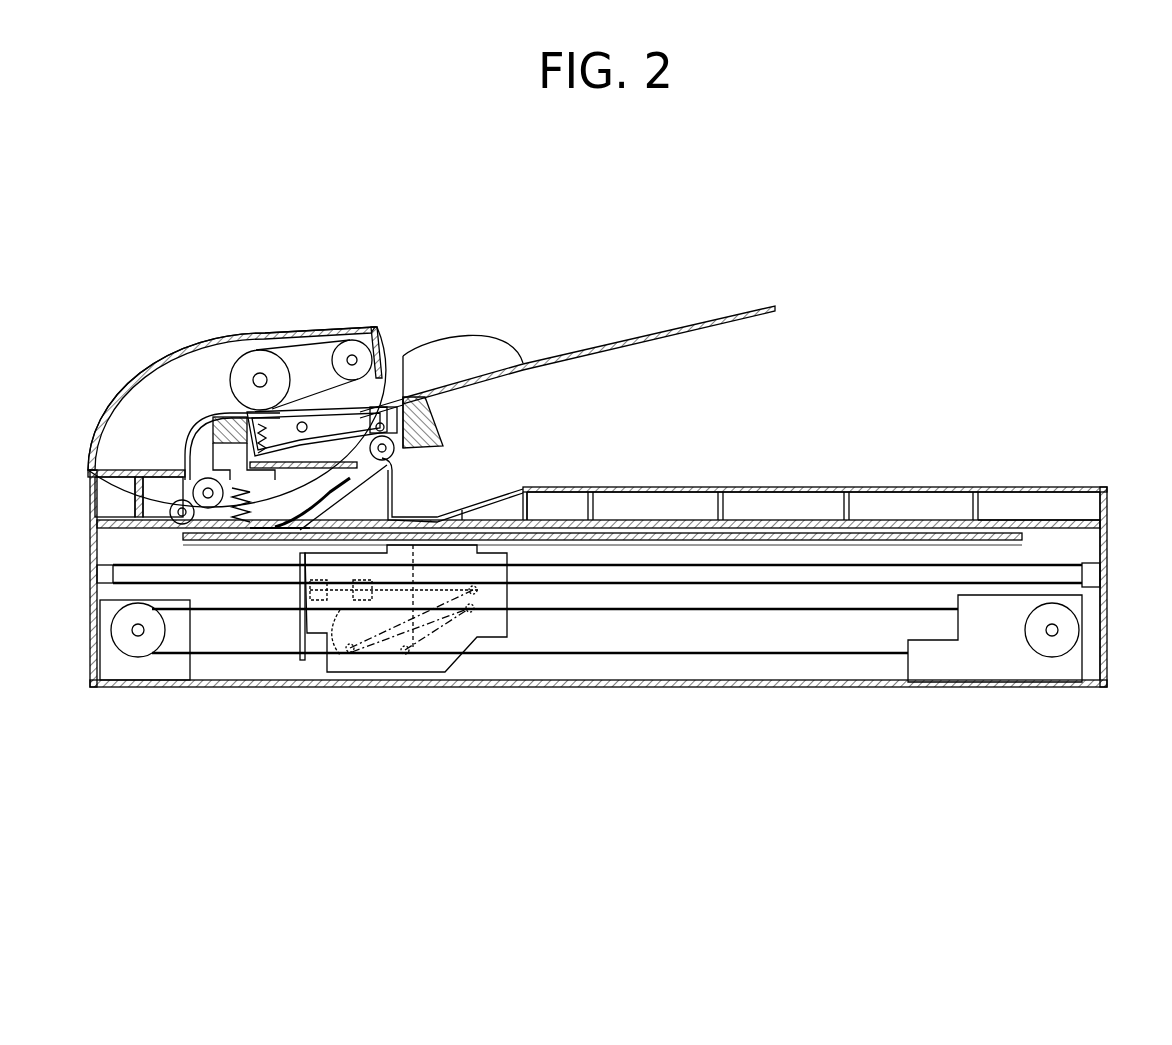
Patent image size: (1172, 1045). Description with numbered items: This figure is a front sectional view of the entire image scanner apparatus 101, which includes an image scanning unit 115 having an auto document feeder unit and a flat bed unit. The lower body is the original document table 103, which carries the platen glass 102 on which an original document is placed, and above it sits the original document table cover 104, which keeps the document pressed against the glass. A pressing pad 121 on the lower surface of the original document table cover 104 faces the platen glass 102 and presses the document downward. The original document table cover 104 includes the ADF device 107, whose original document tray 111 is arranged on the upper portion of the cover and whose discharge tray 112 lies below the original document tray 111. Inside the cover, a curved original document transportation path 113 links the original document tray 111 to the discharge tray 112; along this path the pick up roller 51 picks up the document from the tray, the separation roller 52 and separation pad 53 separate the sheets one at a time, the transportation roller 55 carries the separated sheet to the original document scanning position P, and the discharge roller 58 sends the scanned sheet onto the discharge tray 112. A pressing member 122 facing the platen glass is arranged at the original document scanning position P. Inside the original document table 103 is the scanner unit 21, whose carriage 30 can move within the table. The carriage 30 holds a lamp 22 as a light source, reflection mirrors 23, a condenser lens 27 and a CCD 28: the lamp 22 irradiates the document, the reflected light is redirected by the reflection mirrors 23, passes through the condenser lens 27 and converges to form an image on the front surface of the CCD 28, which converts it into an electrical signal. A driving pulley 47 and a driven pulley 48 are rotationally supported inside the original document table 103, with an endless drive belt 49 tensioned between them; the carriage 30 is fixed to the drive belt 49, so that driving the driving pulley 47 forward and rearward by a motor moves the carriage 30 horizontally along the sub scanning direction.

The image scanner apparatus 101 is at (625, 845).
The platen glass 102 is at (878, 535).
The original document table 103 is at (1108, 532).
The original document table cover 104 is at (982, 487).
The ADF device 107 is at (405, 285).
The original document tray 111 is at (740, 310).
The discharge tray 112 is at (755, 487).
The original document transportation path 113 is at (198, 417).
The image scanning unit 115 is at (582, 260).
The pressing pad 121 is at (683, 540).
The pressing member 122 is at (267, 540).
The scanner unit 21 is at (607, 535).
The lamp 22 is at (435, 512).
The reflection mirrors 23 is at (477, 597).
The condenser lens 27 is at (347, 650).
The Charge Coupled Device (CCD) 28 is at (292, 620).
The carriage 30 is at (447, 677).
The driving pulley 47 is at (1050, 650).
The driven pulley 48 is at (140, 650).
The endless drive belt 49 is at (972, 656).
The pick up roller 51 is at (340, 328).
The separation roller 52 is at (273, 330).
The separation pad 53 is at (263, 358).
The transportation roller 55 is at (185, 450).
The discharge roller 58 is at (440, 430).
The original document scanning position P is at (235, 543).